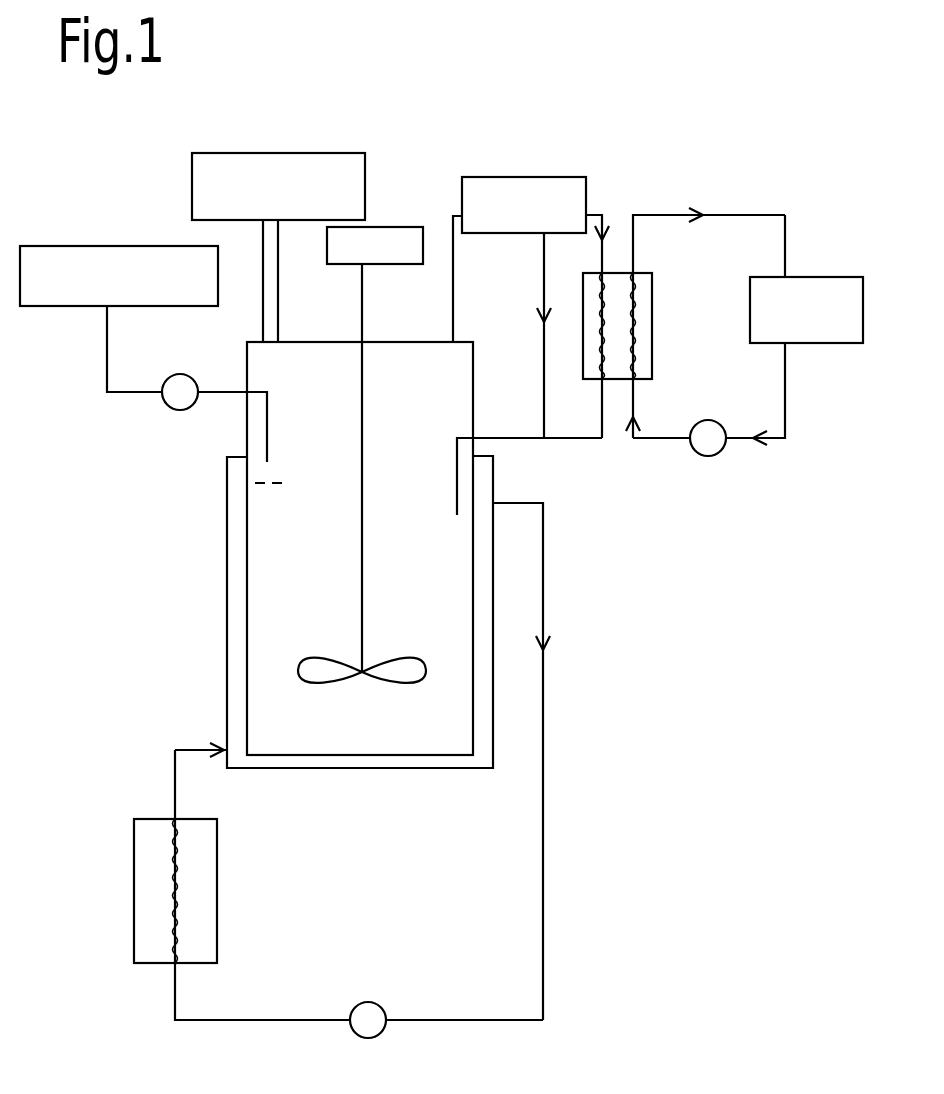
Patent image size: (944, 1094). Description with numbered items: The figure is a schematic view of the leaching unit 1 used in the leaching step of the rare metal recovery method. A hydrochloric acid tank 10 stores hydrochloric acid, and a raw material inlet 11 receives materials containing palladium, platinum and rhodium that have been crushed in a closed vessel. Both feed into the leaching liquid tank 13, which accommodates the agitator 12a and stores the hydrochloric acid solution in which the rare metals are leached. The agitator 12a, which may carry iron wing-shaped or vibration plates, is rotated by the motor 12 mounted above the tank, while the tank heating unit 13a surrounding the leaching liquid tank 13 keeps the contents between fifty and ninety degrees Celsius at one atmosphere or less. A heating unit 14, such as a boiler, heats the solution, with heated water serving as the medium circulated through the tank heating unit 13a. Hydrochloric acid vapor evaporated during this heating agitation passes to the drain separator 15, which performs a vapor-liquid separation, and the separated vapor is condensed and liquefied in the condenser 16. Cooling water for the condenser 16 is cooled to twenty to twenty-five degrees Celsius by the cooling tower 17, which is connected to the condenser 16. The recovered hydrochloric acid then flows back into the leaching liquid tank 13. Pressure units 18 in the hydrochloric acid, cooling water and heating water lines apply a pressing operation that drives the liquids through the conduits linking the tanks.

The leaching unit 1 is at (732, 127).
The hydrochloric acid tank 10 is at (140, 246).
The raw material inlet 11 is at (268, 153).
The motor 12 is at (376, 227).
The agitator 12a is at (397, 655).
The leaching liquid tank 13 is at (370, 342).
The tank heating unit 13a is at (227, 577).
The heating unit 14 is at (203, 819).
The drain separator 15 is at (545, 177).
The condenser 16 is at (640, 273).
The cooling tower 17 is at (832, 277).
The pressure unit 18 is at (190, 375).